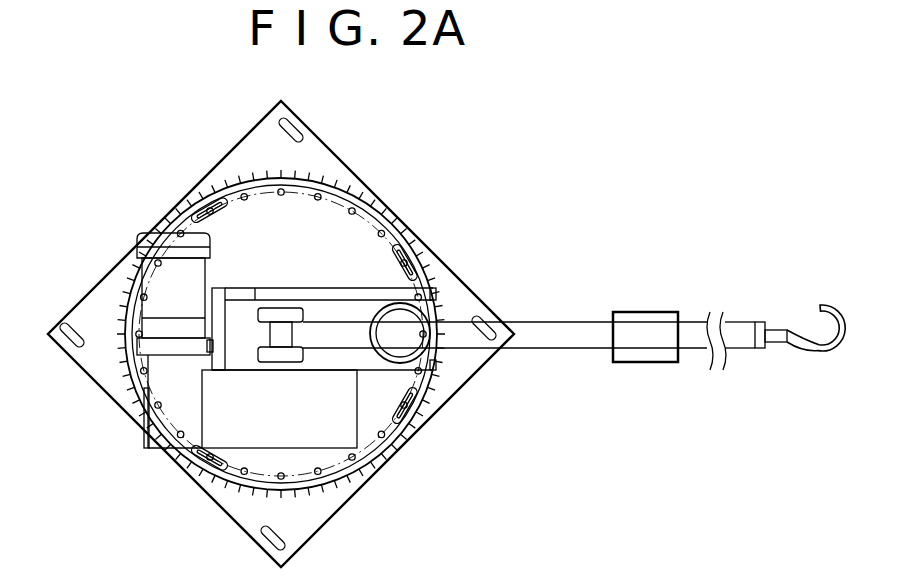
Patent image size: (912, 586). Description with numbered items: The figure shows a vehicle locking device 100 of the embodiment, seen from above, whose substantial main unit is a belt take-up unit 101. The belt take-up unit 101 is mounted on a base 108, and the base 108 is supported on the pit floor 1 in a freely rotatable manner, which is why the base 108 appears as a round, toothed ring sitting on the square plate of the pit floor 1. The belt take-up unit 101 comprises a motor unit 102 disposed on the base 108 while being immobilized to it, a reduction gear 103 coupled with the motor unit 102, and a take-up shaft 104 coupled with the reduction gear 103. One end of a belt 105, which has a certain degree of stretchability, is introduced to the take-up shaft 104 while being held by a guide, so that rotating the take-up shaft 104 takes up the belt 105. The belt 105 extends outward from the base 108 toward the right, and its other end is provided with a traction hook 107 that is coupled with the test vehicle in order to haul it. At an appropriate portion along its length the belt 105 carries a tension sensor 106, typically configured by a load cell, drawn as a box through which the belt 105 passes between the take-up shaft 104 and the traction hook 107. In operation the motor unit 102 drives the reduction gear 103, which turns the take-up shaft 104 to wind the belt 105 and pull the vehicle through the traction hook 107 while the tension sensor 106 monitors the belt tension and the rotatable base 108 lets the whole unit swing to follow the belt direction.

The vehicle locking device 100 is at (432, 334).
The pit floor 1 is at (458, 373).
The belt take-up unit 101 is at (365, 408).
The motor unit 102 is at (157, 290).
The reduction gear 103 is at (250, 436).
The take-up shaft 104 is at (282, 328).
The belt 105 is at (592, 321).
The tension sensor 106 is at (650, 327).
The traction hook 107 is at (800, 355).
The base 108 is at (360, 190).